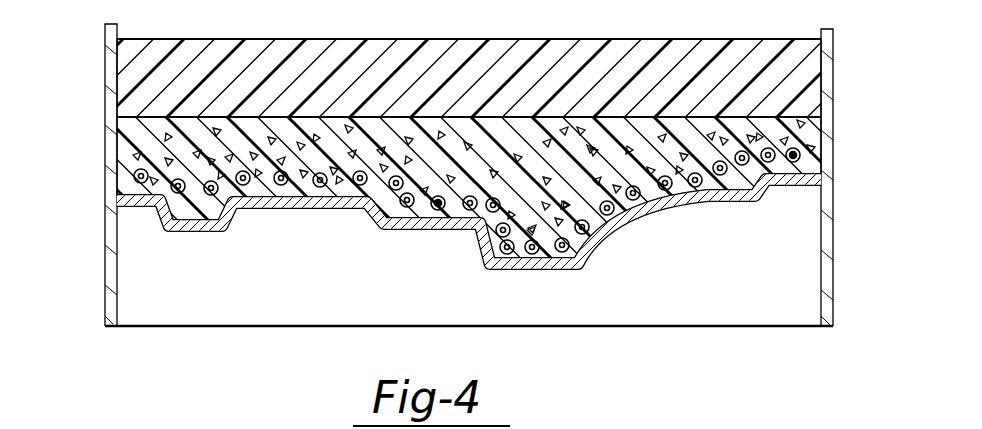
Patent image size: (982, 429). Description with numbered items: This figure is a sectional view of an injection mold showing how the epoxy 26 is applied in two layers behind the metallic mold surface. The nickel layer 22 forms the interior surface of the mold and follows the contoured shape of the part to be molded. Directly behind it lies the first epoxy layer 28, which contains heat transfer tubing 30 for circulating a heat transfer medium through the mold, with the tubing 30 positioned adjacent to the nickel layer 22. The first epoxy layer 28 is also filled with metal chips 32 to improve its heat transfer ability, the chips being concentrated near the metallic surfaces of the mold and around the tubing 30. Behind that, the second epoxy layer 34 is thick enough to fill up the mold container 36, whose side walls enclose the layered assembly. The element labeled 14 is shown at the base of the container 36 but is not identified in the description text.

The base plate 14 is at (705, 313).
The nickel layer 22 is at (513, 270).
The epoxy 26 is at (177, 38).
The first epoxy layer 28 is at (645, 117).
The heat transfer tubing 30 is at (352, 195).
The metal chips 32 is at (590, 148).
The second epoxy layer 34 is at (527, 50).
The mold container 36 is at (105, 298).